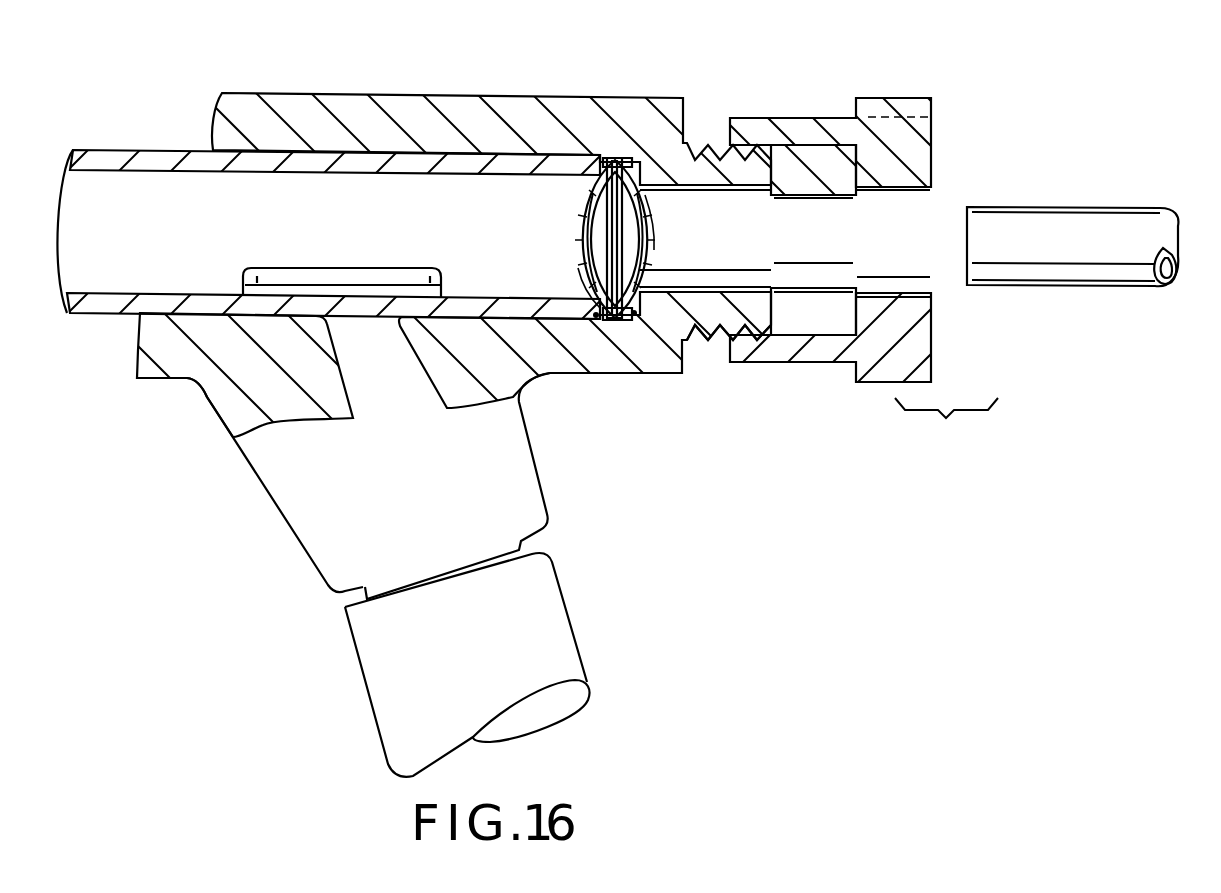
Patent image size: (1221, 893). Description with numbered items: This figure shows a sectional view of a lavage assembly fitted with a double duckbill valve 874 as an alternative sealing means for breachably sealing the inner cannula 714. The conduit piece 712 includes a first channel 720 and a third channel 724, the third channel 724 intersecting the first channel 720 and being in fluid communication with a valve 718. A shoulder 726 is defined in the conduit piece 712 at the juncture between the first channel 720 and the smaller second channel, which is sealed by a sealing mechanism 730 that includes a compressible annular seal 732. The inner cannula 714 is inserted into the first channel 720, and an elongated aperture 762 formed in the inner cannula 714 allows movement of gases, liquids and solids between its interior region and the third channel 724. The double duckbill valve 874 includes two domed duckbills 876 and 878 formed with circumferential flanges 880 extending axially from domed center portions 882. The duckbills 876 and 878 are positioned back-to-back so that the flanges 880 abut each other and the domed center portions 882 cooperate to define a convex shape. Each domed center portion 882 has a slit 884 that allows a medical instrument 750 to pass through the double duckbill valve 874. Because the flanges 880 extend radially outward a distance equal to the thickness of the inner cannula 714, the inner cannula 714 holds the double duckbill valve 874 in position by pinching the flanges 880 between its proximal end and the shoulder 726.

The conduit piece 712 is at (303, 88).
The inner cannula 714 is at (410, 174).
The valve 718 is at (557, 615).
The first channel 720 is at (288, 300).
The third channel 724 is at (340, 373).
The shoulder 726 is at (621, 172).
The sealing mechanism 730 is at (796, 108).
The compressible annular seal 732 is at (812, 199).
The medical instrument 750 is at (1070, 207).
The elongated aperture 762 is at (388, 282).
The double duckbill valve 874 is at (570, 198).
The domed duckbill 876 is at (585, 292).
The domed duckbill 878 is at (712, 336).
The circumferential flanges 880 is at (584, 155).
The domed center portions 882 is at (643, 207).
The slit 884 is at (578, 264).